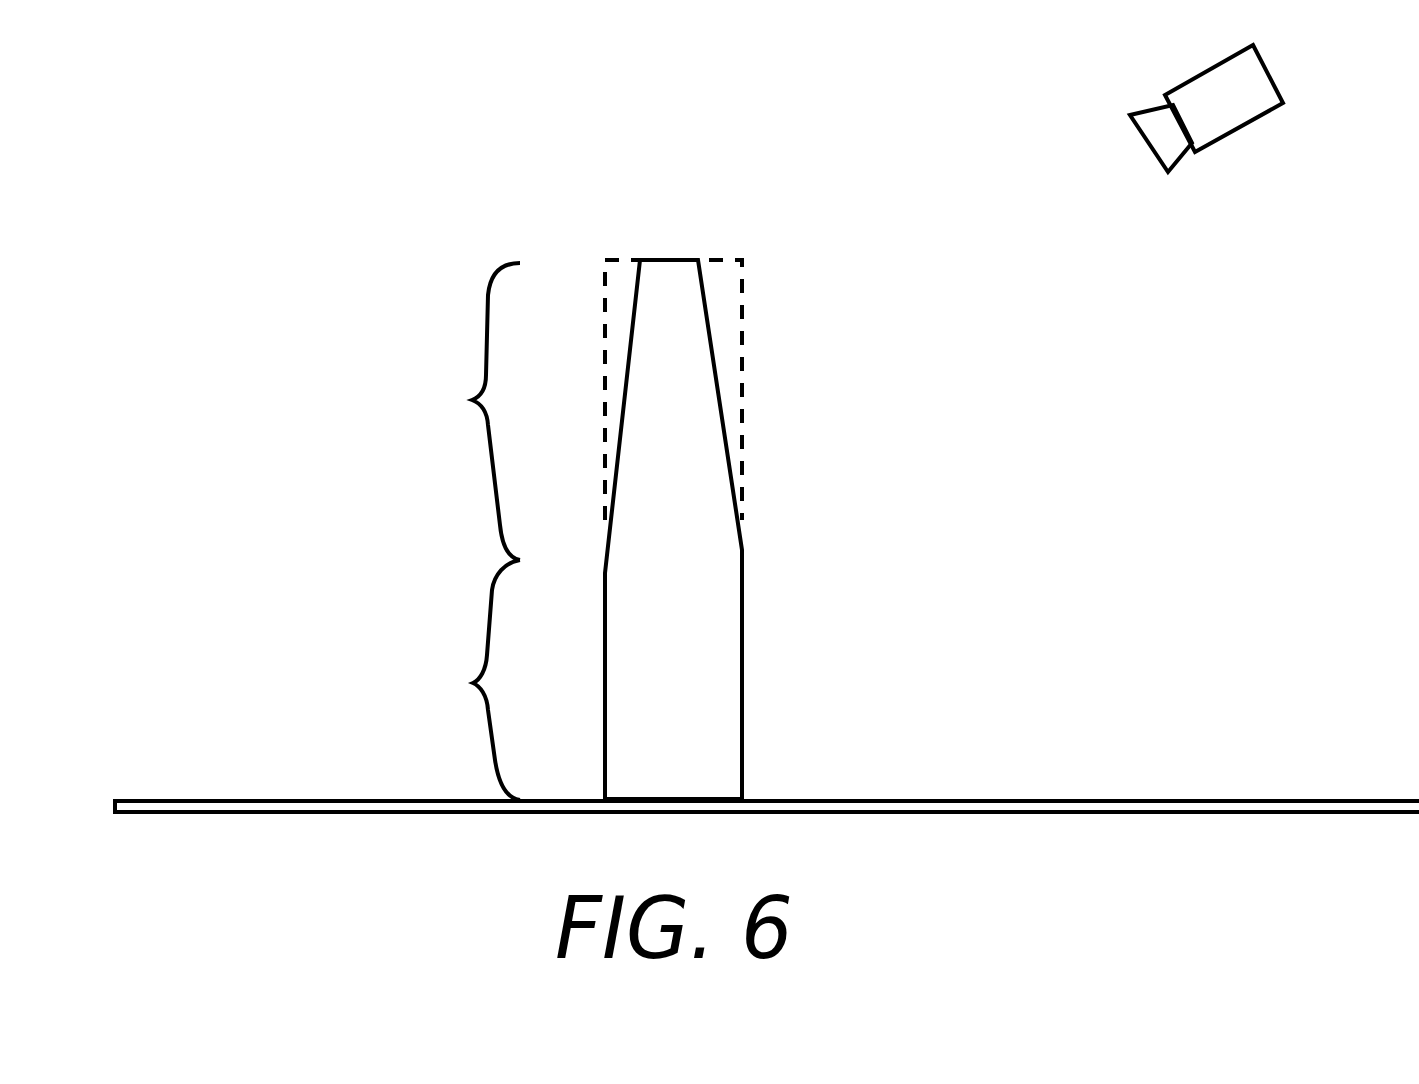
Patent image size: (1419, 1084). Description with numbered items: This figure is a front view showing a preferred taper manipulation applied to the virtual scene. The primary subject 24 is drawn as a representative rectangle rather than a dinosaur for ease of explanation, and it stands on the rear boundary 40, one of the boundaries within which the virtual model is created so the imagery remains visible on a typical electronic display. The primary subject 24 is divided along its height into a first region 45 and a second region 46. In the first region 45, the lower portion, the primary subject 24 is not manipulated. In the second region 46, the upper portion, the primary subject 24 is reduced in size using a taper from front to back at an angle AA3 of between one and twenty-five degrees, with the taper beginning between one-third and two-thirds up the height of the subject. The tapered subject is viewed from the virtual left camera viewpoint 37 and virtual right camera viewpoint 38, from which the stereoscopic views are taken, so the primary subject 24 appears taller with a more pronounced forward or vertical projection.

The primary subject 24 is at (662, 260).
The taper angle AA3 is at (733, 415).
The second region 46 is at (470, 400).
The first region 45 is at (470, 683).
The rear boundary 40 is at (115, 805).
The virtual left camera viewpoint 37 is at (1221, 156).
The virtual right camera viewpoint 38 is at (1238, 132).